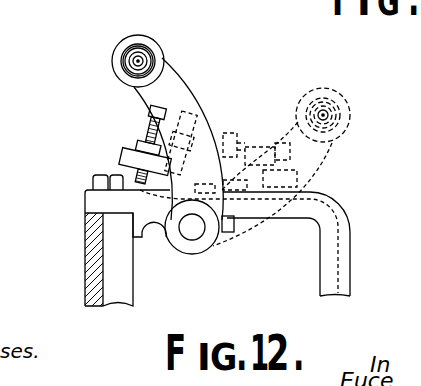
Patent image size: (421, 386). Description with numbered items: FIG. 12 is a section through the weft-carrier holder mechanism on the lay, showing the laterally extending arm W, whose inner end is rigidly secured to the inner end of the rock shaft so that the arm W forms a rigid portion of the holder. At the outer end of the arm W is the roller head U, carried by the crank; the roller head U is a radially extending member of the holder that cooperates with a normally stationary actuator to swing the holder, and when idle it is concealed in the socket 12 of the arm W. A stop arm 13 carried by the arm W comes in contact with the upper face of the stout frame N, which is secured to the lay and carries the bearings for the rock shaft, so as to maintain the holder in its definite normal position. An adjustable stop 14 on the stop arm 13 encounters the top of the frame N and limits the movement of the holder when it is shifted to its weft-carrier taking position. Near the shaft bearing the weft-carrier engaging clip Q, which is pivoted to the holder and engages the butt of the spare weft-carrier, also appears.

The socket 12 is at (139, 53).
The roller head U is at (125, 60).
The laterally extending arm W is at (177, 93).
The adjustable stop 14 is at (147, 133).
The stop arm 13 is at (125, 157).
The weft-carrier engaging clip Q is at (192, 233).
The frame N is at (332, 250).